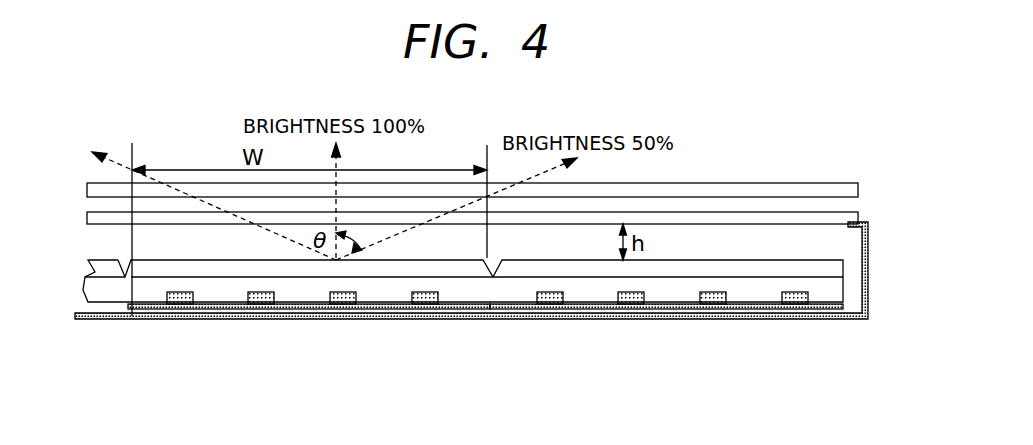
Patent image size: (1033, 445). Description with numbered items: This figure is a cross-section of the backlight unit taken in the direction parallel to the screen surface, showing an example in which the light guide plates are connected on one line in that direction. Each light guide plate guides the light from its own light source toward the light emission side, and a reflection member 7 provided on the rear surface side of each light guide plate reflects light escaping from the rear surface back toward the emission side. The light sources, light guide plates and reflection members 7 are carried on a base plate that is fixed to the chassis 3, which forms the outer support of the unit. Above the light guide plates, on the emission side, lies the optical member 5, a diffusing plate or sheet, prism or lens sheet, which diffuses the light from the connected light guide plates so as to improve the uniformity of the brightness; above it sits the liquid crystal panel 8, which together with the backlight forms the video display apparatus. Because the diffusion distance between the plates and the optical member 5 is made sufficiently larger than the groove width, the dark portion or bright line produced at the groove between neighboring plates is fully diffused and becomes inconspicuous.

The liquid crystal panel 8 is at (731, 188).
The optical member 5 is at (765, 215).
The reflection member 7 is at (716, 305).
The chassis 3 is at (789, 319).